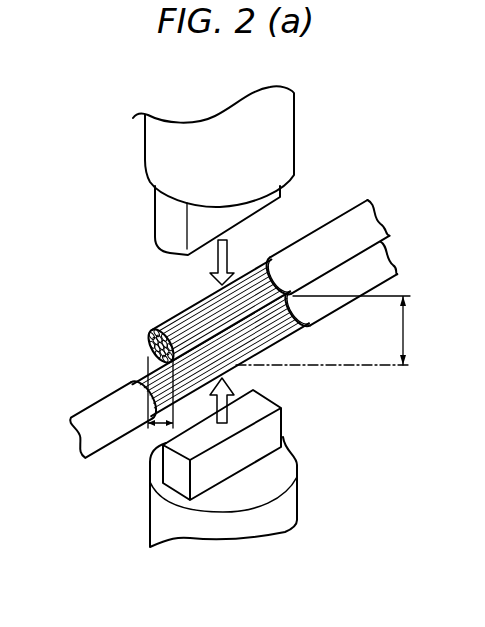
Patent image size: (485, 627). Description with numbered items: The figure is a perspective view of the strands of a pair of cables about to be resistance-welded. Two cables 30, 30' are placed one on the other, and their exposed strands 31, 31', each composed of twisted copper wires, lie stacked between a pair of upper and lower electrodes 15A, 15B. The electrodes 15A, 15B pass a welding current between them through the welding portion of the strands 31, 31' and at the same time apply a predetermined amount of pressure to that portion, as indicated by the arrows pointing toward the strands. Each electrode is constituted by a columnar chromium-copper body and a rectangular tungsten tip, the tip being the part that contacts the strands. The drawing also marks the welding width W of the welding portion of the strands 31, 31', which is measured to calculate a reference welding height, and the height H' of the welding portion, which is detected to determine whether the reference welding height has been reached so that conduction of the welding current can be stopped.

The upper electrode 15A is at (237, 170).
The lower electrode 15B is at (205, 470).
The cable 30 is at (219, 373).
The cable 30' is at (266, 263).
The strand 31 is at (239, 353).
The strand 31' is at (216, 313).
The height of the welding portion H' is at (334, 330).
The welding width W is at (155, 425).